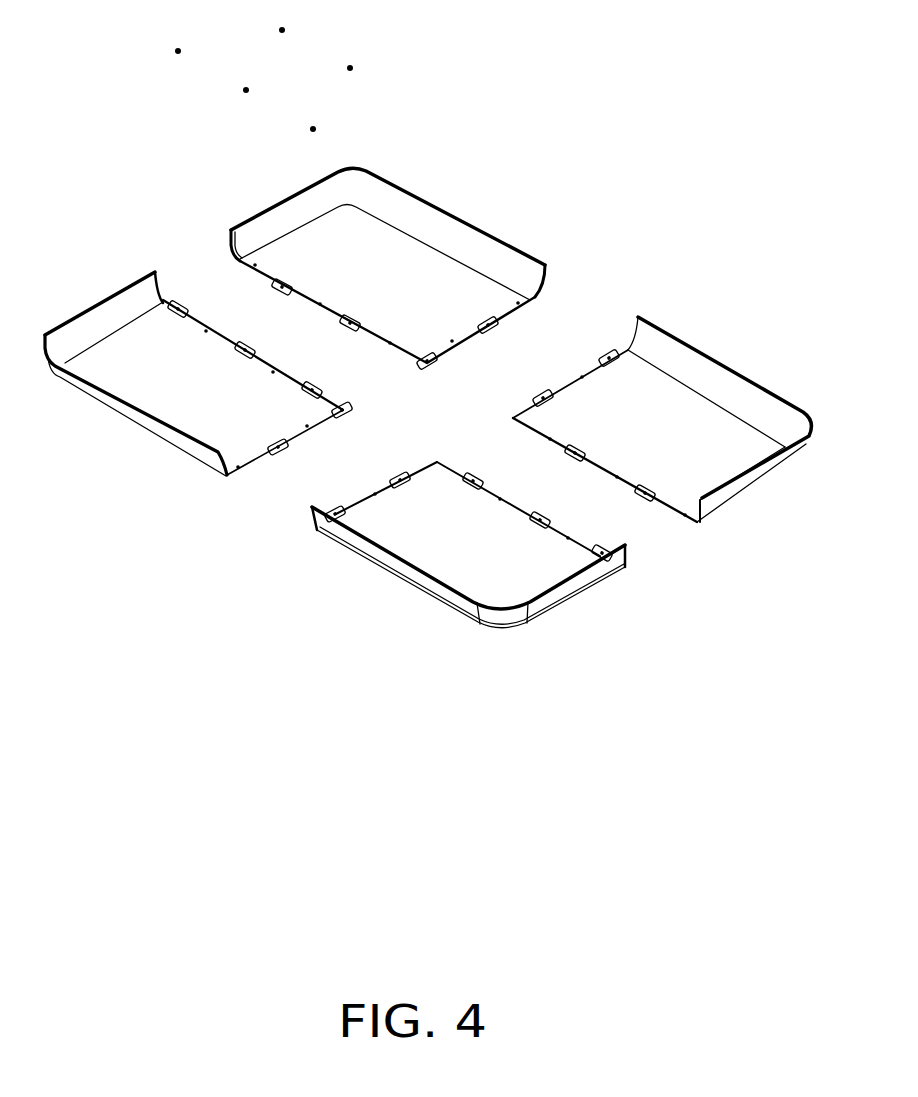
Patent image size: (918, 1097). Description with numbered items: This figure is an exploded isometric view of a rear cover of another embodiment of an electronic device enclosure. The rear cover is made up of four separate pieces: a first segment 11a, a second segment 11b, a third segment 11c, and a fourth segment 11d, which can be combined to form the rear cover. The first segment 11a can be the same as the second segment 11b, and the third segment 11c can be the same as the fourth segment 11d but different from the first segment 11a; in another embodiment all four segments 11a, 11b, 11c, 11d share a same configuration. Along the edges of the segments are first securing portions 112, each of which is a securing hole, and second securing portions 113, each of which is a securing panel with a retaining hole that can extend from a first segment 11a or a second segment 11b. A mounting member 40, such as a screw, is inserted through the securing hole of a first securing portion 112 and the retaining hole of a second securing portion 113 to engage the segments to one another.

The mounting member 40 is at (175, 48).
The first segment 11a is at (445, 272).
The second segment 11b is at (438, 555).
The third segment 11c is at (680, 413).
The fourth segment 11d is at (177, 402).
The first securing portion 112 is at (255, 262).
The second securing portion 113 is at (178, 306).